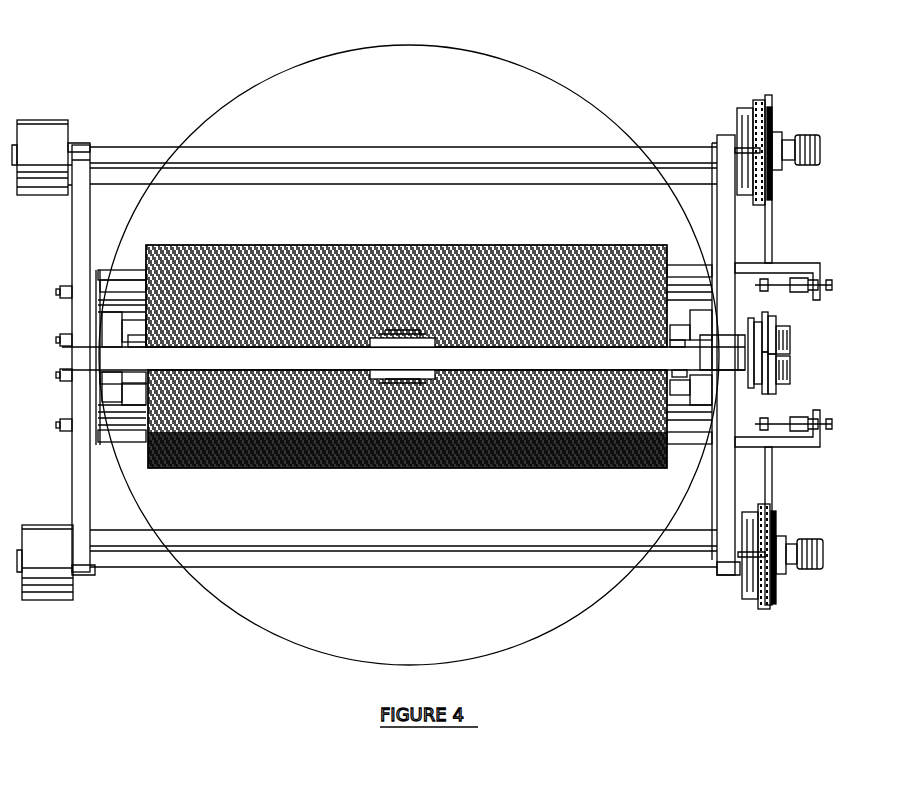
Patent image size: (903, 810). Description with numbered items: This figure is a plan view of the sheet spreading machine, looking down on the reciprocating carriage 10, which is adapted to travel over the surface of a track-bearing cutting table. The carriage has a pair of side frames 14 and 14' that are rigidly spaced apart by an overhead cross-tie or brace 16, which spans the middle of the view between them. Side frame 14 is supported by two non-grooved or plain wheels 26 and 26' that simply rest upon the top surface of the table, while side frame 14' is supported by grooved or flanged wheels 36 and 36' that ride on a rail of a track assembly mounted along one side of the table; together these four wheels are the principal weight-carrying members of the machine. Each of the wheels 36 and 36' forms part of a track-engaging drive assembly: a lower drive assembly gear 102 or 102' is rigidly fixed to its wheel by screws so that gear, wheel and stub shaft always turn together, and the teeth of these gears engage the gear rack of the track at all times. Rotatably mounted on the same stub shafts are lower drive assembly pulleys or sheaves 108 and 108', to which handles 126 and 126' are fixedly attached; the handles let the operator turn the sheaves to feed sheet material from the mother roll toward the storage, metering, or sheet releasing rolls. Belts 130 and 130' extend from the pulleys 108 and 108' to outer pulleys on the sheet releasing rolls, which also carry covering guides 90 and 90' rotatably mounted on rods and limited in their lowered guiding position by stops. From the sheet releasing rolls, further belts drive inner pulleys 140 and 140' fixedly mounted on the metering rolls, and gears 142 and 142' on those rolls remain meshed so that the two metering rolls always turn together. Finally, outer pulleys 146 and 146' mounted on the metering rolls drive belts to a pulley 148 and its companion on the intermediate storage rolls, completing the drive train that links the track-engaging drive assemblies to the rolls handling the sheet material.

The reciprocating carriage 10 is at (70, 478).
The side frame 14 is at (57, 360).
The side frame 14' is at (694, 355).
The overhead cross-tie or brace 16 is at (403, 356).
The plain wheel 26 is at (45, 578).
The plain wheel 26' is at (42, 142).
The grooved or flanged wheel 36 is at (751, 572).
The grooved or flanged wheel 36' is at (743, 134).
The covering guide 90 is at (680, 354).
The covering guide 90' is at (711, 352).
The lower drive assembly gear 102 is at (781, 570).
The lower drive assembly gear 102' is at (777, 134).
The lower drive assembly pulley or sheave 108 is at (796, 563).
The lower drive assembly pulley or sheave 108' is at (793, 146).
The handle 126 is at (825, 562).
The handle 126' is at (829, 143).
The belt 130 is at (783, 507).
The belt 130' is at (783, 197).
The inner pulley 140 is at (806, 376).
The inner pulley 140' is at (807, 330).
The gear 142 is at (788, 383).
The gear 142' is at (790, 325).
The outer pulley 146 is at (805, 370).
The outer pulley 146' is at (809, 339).
The pulley 148 is at (776, 320).